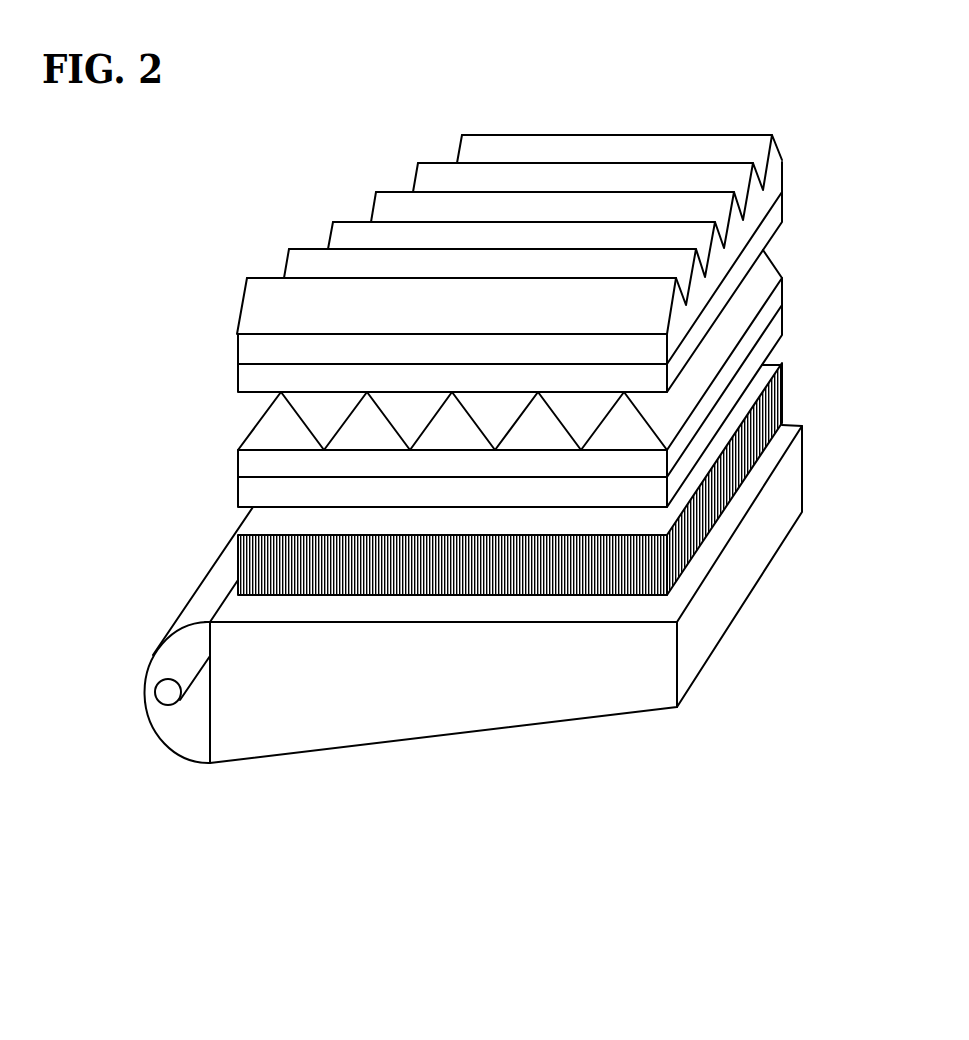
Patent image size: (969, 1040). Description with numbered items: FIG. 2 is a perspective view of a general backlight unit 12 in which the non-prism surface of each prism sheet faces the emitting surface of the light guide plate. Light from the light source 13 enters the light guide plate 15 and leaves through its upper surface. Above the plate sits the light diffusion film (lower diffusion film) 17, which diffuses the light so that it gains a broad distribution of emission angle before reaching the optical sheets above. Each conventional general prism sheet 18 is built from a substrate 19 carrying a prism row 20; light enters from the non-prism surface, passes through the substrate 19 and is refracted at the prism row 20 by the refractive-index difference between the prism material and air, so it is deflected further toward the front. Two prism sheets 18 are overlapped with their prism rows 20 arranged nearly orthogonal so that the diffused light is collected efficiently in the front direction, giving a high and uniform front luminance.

The backlight unit 12 is at (125, 278).
The light source 13 is at (168, 695).
The light guide plate 15 is at (600, 675).
The light diffusion film (lower diffusion film) 17 is at (768, 408).
The conventional general prism sheet 18 is at (802, 335).
The substrate 19 is at (260, 378).
The prism row 20 is at (260, 330).